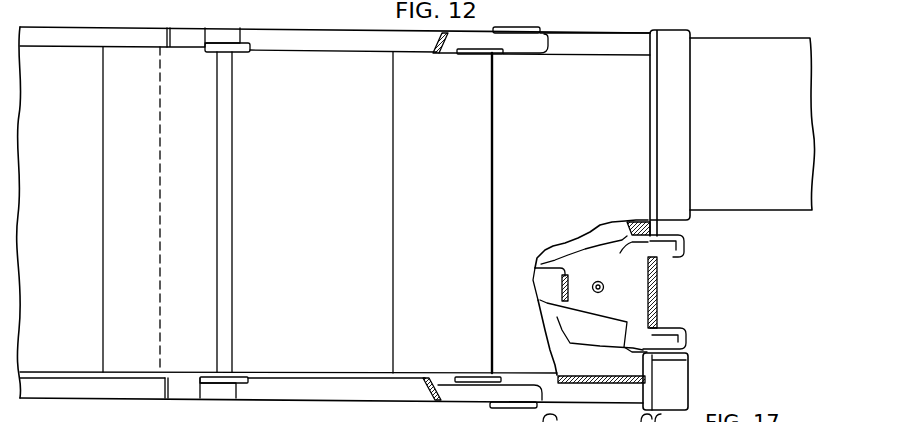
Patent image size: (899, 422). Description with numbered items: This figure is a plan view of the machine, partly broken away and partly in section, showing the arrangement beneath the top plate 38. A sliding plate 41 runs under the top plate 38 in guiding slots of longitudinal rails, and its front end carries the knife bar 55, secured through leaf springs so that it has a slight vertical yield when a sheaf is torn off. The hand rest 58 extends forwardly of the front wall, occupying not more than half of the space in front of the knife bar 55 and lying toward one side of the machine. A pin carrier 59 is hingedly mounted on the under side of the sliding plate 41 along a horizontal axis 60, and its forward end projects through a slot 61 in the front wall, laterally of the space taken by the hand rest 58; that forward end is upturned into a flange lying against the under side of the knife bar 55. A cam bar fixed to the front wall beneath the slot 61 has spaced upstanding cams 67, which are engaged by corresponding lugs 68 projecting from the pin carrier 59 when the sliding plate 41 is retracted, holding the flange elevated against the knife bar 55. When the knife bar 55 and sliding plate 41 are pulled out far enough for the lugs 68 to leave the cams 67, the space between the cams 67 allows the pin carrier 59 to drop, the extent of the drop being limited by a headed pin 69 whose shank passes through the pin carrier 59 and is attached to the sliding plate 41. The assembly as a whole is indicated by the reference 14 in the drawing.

The assembly 14 is at (602, 4).
The top plate 38 is at (141, 58).
The hand rest 58 is at (743, 43).
The knife bar 55 is at (683, 175).
The slot 61 is at (627, 236).
The pin carrier 59 is at (583, 277).
The headed pin 69 is at (605, 281).
The horizontal axis 60 is at (562, 281).
The sliding plate 41 is at (568, 348).
The upstanding cams 67 is at (688, 239).
The lugs 68 is at (663, 325).